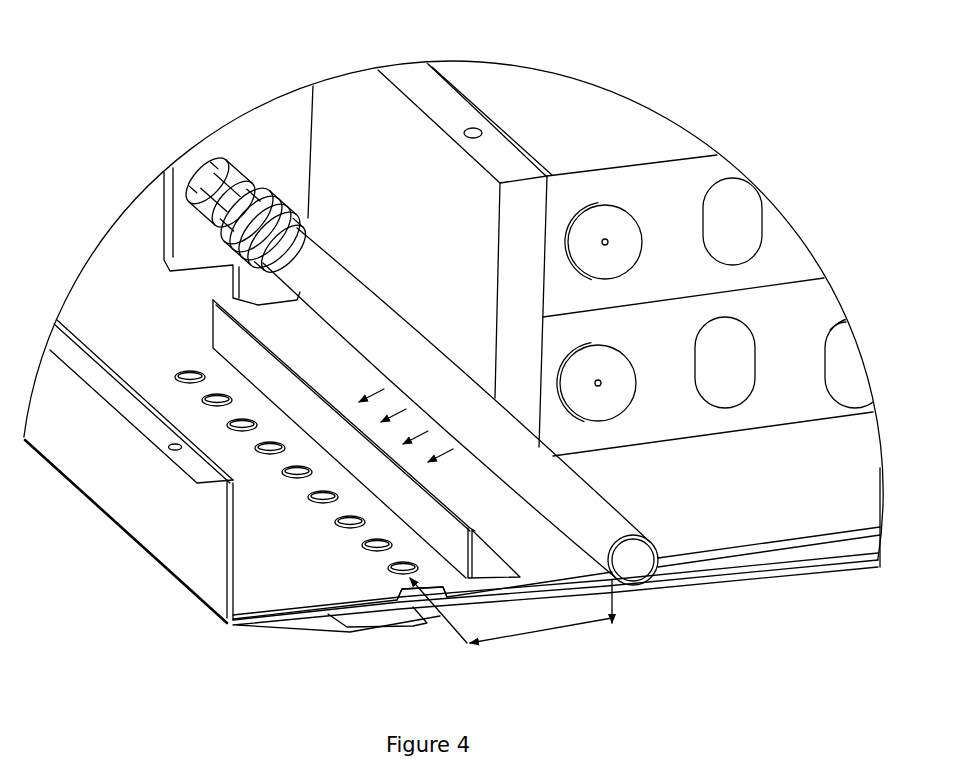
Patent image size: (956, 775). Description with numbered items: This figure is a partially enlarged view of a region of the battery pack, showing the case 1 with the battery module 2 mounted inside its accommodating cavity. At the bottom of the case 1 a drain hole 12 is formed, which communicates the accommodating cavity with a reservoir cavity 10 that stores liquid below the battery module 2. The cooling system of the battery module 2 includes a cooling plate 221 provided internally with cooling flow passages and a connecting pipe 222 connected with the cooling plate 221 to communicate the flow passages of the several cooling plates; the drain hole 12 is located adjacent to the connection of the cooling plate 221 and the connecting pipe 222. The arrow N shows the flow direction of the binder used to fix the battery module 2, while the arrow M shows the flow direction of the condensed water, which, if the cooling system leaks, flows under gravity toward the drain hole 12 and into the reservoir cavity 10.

The case 1 is at (200, 557).
The battery module 2 is at (588, 117).
The reservoir cavity 10 is at (425, 604).
The drain hole 12 is at (348, 524).
The cooling plate 221 is at (200, 162).
The connecting pipe 222 is at (312, 262).
The arrow N is at (398, 412).
The arrow M is at (511, 621).